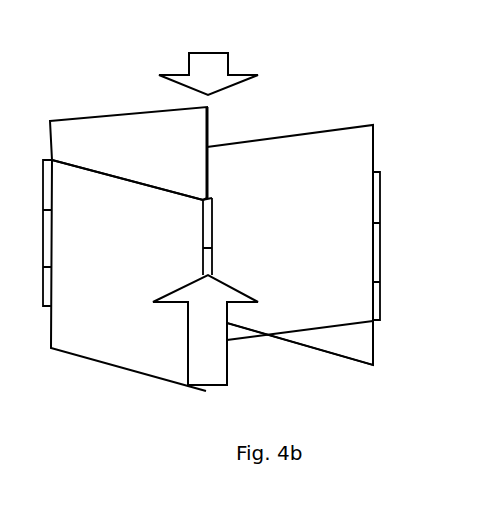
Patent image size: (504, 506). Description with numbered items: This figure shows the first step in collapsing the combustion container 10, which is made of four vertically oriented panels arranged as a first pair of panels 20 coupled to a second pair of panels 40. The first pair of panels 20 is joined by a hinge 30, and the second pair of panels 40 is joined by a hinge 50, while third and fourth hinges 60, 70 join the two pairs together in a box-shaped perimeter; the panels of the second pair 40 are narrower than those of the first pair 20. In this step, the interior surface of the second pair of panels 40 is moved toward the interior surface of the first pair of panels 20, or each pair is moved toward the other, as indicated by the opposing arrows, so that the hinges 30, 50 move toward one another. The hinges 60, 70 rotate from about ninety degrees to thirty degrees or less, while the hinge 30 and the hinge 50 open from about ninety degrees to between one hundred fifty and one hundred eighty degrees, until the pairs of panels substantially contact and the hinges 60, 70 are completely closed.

The container 10 is at (287, 48).
The first pair of panels 20 is at (264, 320).
The hinge 30 is at (213, 228).
The second pair of panels 40 is at (208, 123).
The hinge 50 is at (212, 145).
The third hinge 60 is at (40, 193).
The fourth hinge 70 is at (379, 208).